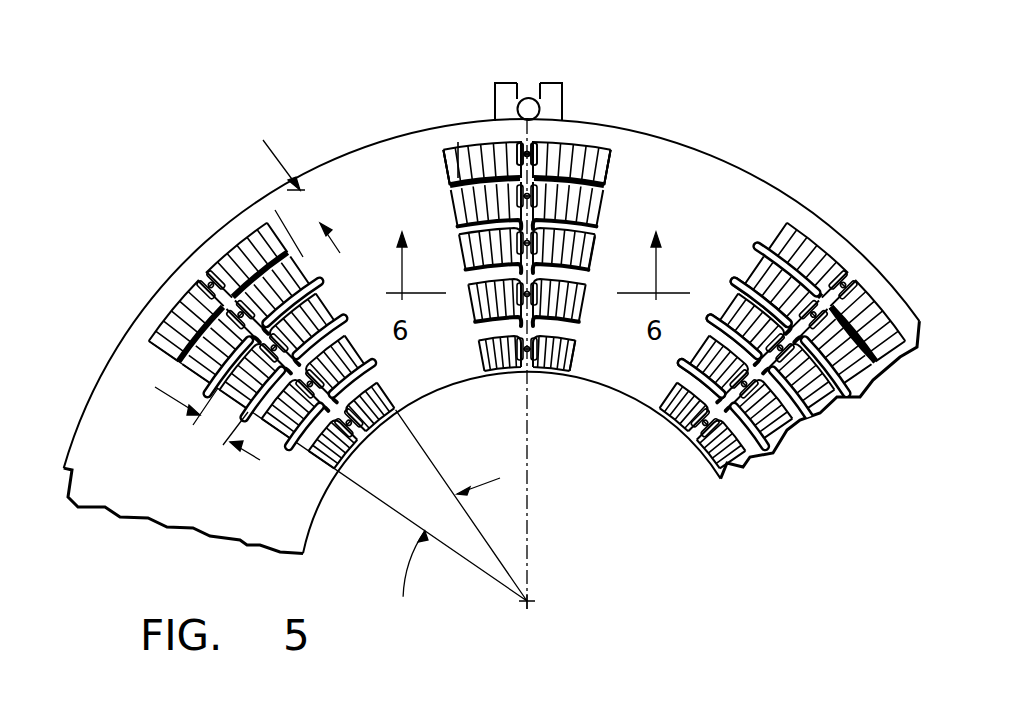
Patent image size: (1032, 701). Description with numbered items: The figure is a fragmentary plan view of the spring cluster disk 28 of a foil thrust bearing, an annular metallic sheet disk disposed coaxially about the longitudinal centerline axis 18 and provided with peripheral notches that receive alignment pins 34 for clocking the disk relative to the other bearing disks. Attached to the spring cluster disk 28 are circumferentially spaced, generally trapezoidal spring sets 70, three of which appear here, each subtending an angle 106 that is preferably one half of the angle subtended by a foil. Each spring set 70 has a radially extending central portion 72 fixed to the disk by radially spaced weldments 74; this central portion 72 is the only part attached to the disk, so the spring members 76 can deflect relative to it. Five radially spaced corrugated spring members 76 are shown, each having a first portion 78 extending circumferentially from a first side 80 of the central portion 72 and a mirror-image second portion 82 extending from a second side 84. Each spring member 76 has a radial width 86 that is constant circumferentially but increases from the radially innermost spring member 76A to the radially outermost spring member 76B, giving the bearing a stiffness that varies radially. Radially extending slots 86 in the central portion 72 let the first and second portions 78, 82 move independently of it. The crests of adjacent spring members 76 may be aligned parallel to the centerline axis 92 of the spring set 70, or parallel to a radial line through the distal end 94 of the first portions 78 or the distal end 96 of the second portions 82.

The longitudinal centerline axis 18 is at (531, 605).
The spring cluster disk 28 is at (745, 180).
The alignment pins 34 is at (530, 97).
The spring sets 70 is at (588, 136).
The central portion 72 is at (510, 152).
The weldments 74 is at (815, 282).
The spring members 76 is at (588, 298).
The radially innermost spring member 76A is at (552, 365).
The radially outermost spring member 76B is at (603, 170).
The first portion 78 is at (457, 142).
The first side 80 is at (458, 150).
The second portion 82 is at (612, 152).
The second side 84 is at (541, 150).
The radial width 86 is at (272, 150).
The centerline axis 92 is at (527, 523).
The distal end 94 is at (700, 345).
The distal end 96 is at (878, 362).
The angle 106 is at (402, 580).